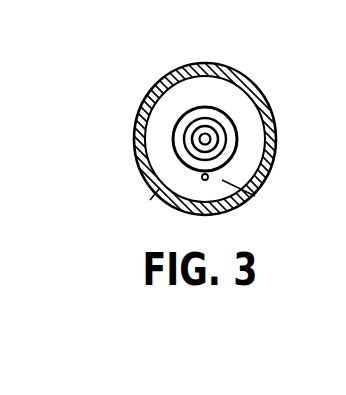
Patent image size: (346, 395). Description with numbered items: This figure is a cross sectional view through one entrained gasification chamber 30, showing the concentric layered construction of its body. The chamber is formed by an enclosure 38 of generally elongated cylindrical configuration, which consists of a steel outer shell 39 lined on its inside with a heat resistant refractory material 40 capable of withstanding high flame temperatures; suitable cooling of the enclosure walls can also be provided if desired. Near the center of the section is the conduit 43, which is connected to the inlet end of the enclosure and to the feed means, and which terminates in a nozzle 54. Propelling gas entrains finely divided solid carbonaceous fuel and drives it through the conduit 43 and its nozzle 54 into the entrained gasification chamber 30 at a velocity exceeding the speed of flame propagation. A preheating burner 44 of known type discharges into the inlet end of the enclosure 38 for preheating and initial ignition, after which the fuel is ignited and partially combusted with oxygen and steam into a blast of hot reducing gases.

The entrained gasification chamber 30 is at (154, 191).
The enclosure 38 is at (220, 65).
The steel outer shell 39 is at (209, 178).
The heat resistant refractory material 40 is at (259, 95).
The conduit 43 is at (200, 138).
The preheating burner 44 is at (248, 190).
The nozzle 54 is at (196, 128).